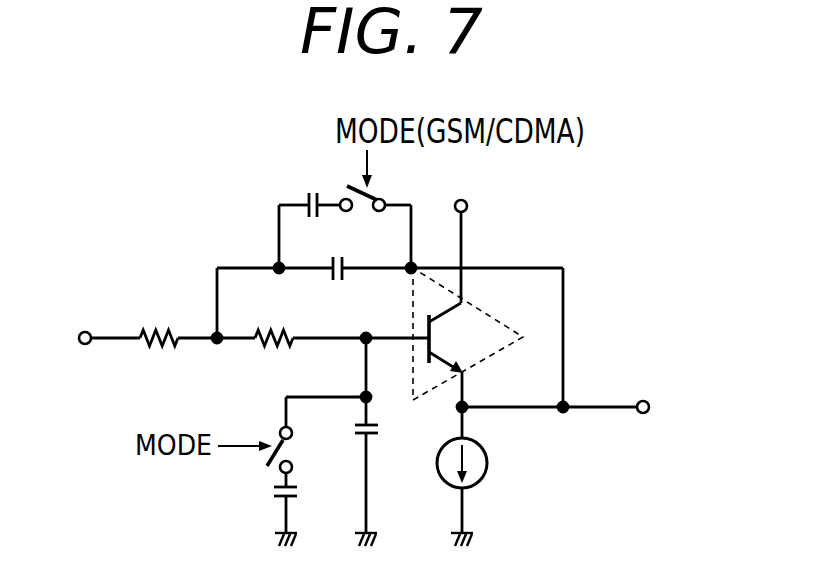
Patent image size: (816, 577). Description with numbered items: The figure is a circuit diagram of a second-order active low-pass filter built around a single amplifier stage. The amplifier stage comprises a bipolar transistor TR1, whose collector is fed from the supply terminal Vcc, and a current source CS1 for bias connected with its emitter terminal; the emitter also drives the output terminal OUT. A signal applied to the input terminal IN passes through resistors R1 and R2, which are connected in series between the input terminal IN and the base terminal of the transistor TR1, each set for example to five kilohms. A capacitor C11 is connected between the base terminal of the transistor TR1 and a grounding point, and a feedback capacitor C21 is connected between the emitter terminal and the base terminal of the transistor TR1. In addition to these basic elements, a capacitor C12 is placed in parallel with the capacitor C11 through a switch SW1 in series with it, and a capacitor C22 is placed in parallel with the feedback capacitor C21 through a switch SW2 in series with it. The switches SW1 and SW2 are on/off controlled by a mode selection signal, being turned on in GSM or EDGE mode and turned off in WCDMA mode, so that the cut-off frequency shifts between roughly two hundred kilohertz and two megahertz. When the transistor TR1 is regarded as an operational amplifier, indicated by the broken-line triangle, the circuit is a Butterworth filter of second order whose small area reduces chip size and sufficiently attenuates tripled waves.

The input terminal IN is at (69, 340).
The output terminal OUT is at (675, 410).
The power supply terminal Vcc is at (485, 244).
The resistor R1 is at (159, 357).
The resistor R2 is at (274, 357).
The capacitor C11 is at (391, 427).
The capacitor C12 is at (259, 503).
The feedback capacitor C21 is at (342, 287).
The capacitor C22 is at (309, 213).
The switch SW1 is at (308, 450).
The switch SW2 is at (375, 227).
The bipolar transistor TR1 is at (468, 337).
The current source CS1 is at (488, 470).